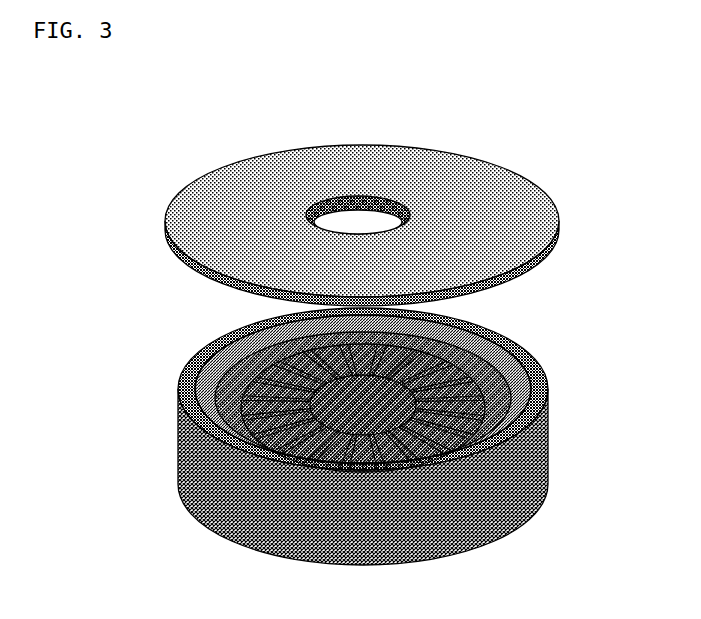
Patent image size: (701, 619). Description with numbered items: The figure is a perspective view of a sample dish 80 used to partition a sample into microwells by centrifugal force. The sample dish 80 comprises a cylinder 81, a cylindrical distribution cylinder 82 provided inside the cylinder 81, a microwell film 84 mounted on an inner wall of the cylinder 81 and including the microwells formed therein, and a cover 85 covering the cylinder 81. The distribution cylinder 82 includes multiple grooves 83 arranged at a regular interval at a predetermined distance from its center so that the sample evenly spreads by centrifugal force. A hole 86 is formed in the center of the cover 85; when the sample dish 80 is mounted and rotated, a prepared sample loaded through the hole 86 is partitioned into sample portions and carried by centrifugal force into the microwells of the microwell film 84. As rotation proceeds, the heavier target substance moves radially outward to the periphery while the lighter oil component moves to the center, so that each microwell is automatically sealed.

The sample dish 80 is at (532, 121).
The cylinder 81 is at (548, 434).
The distribution cylinder 82 is at (551, 383).
The grooves 83 is at (458, 547).
The microwell film 84 is at (530, 344).
The cover 85 is at (402, 197).
The hole 86 is at (372, 213).